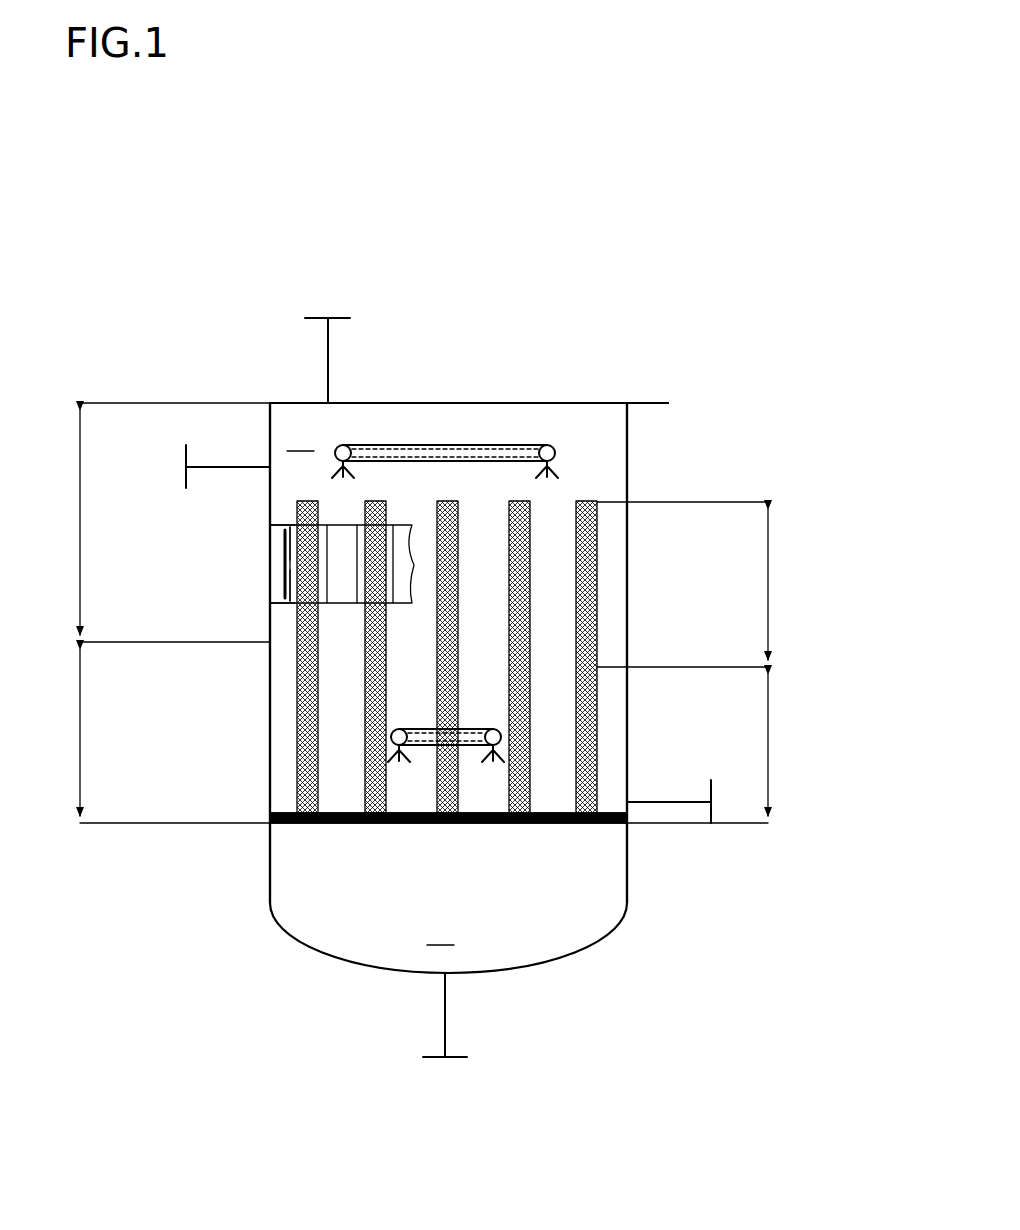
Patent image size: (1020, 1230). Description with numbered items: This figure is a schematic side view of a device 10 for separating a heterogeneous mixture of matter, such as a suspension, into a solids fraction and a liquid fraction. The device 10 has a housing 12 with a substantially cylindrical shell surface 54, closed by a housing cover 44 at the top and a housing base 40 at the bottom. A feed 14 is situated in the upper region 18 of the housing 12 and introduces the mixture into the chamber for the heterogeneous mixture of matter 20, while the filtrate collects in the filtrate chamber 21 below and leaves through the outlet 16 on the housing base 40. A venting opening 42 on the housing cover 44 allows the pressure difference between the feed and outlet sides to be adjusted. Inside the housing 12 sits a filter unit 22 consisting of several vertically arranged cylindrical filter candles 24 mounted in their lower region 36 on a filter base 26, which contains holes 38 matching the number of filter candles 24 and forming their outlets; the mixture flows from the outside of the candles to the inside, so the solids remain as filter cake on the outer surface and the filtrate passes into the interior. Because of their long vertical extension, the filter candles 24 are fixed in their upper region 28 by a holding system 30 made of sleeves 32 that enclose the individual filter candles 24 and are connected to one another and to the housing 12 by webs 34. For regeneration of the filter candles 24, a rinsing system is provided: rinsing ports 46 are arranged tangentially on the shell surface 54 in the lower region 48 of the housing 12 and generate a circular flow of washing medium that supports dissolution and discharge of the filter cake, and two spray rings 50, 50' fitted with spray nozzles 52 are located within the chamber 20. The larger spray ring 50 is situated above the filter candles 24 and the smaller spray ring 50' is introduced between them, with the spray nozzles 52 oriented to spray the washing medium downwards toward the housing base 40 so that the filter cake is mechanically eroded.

The device 10 is at (619, 373).
The housing 12 is at (267, 398).
The feed 14 is at (186, 460).
The outlet 16 is at (467, 1057).
The upper region 18 is at (158, 522).
The chamber for the heterogeneous mixture of matter 20 is at (303, 438).
The filtrate chamber 21 is at (443, 932).
The filter unit 22 is at (521, 827).
The filter candles 24 is at (532, 592).
The filter base 26 is at (270, 850).
The upper region of the filter candles 28 is at (703, 584).
The holding system 30 is at (283, 560).
The sleeves 32 is at (290, 598).
The webs 34 is at (278, 535).
The lower region 36 is at (717, 748).
The holes 38 is at (373, 824).
The housing base 40 is at (590, 952).
The venting opening 42 is at (350, 318).
The housing cover 44 is at (432, 402).
The rinsing ports 46 is at (711, 824).
The lower region of the housing 48 is at (159, 736).
The spray ring 50 is at (505, 469).
The spray ring 50' is at (539, 733).
The spray nozzles 52 is at (336, 460).
The shell surface 54 is at (628, 443).